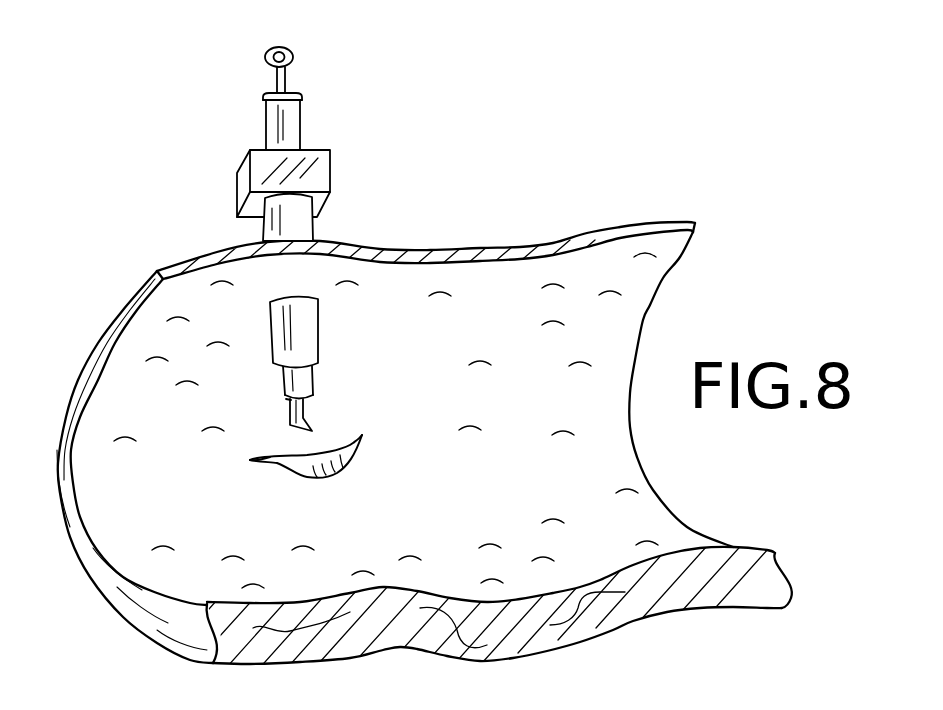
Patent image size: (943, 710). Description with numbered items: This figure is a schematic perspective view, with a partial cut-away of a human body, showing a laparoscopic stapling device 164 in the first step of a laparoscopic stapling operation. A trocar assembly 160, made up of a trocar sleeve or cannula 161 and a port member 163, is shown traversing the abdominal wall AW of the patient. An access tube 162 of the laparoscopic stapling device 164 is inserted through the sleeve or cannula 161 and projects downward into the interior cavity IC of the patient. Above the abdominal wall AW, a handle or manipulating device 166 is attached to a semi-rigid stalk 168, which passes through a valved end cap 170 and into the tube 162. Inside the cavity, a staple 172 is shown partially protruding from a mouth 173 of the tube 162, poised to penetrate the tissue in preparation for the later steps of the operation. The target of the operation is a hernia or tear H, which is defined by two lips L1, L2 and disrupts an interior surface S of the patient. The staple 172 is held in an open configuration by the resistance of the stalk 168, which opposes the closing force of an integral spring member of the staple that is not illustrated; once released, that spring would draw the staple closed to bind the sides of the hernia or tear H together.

The trocar assembly 160 is at (270, 205).
The trocar sleeve or cannula 161 is at (313, 232).
The access tube 162 is at (302, 125).
The port member 163 is at (331, 167).
The laparoscopic stapling device 164 is at (195, 72).
The handle or manipulating device 166 is at (265, 58).
The semi-rigid stalk 168 is at (278, 78).
The valved end cap 170 is at (302, 97).
The staple 172 is at (311, 420).
The mouth 173 is at (287, 400).
The abdominal wall AW is at (555, 245).
The interior surface S is at (647, 275).
The interior cavity IC is at (565, 498).
The hernia or tear H is at (360, 472).
The lip L1 is at (262, 457).
The lip L2 is at (330, 478).